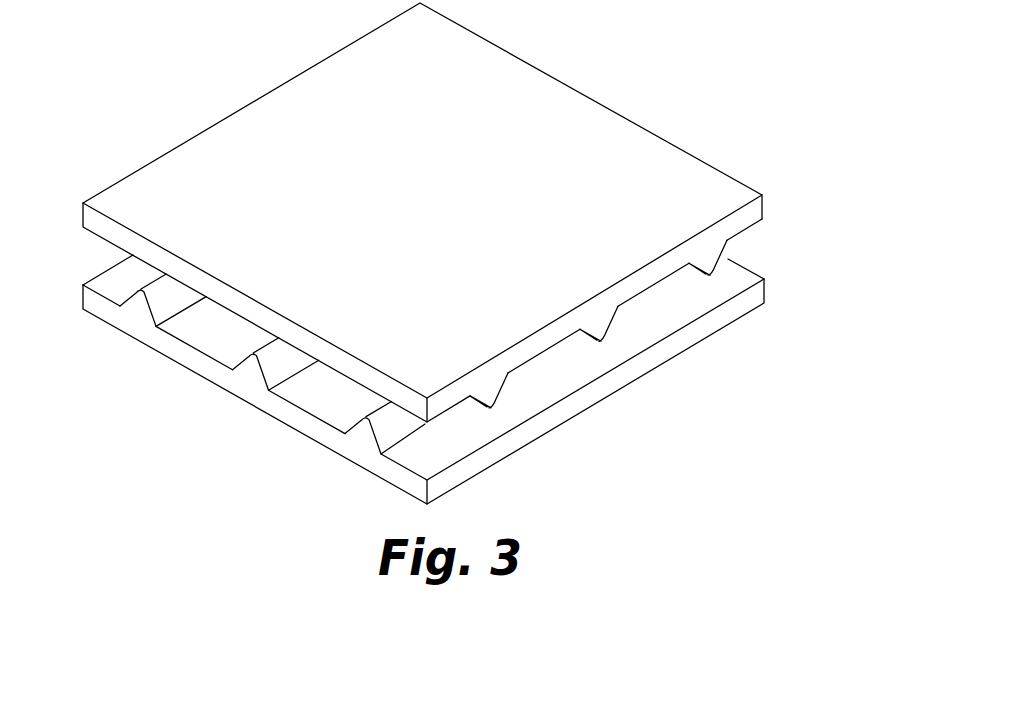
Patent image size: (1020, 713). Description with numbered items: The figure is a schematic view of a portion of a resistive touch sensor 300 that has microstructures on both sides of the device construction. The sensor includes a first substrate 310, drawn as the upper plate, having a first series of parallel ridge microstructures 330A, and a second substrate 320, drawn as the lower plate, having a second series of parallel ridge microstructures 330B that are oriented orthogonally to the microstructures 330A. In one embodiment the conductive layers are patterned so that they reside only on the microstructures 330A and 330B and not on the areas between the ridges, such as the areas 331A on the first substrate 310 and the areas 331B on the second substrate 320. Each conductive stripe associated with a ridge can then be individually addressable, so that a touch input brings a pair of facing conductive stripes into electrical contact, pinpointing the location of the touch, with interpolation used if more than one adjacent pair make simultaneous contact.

The resistive touch sensor 300 is at (607, 66).
The first substrate 310 is at (757, 214).
The second substrate 320 is at (755, 298).
The first series of parallel ridge microstructures 330A is at (490, 403).
The second series of parallel ridge microstructures 330B is at (245, 372).
The areas between microstructures 331A is at (657, 290).
The areas between microstructures 331B is at (307, 394).